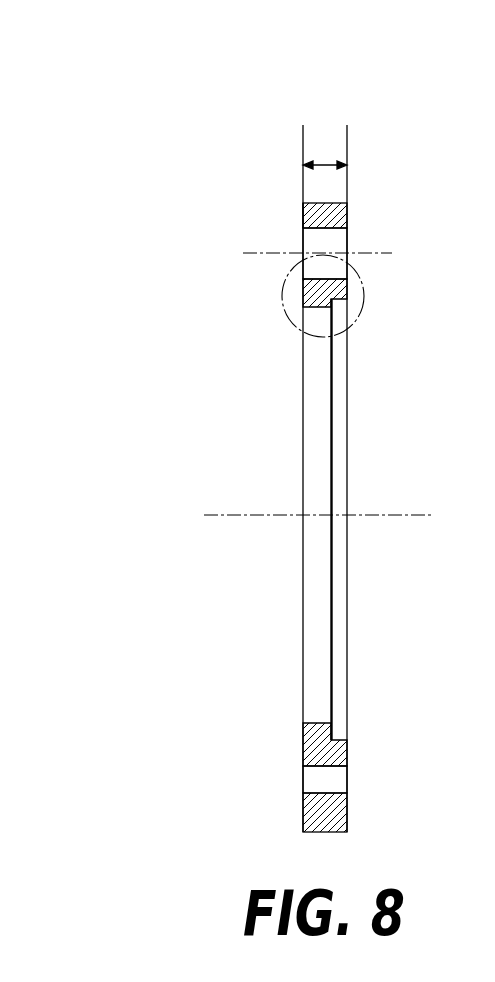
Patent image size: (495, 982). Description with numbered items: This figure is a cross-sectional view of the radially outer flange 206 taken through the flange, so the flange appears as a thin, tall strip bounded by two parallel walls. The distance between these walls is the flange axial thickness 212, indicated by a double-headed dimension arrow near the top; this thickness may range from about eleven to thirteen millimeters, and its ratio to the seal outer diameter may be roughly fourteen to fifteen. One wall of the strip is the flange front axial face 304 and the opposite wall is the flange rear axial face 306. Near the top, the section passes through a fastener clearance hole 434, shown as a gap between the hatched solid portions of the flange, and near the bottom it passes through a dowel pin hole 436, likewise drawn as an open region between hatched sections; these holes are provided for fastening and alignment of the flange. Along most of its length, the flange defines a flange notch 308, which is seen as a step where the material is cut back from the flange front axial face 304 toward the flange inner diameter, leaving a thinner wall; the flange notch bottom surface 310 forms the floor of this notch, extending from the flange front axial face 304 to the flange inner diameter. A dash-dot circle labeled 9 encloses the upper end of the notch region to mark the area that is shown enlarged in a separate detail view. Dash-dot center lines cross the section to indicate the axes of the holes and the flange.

The radially outer flange 206 is at (322, 107).
The flange axial thickness 212 is at (324, 163).
The flange front axial face 304 is at (346, 217).
The flange rear axial face 306 is at (303, 220).
The fastener clearance holes 434 is at (347, 239).
The detail area of FIG. 9 is at (283, 292).
The flange notch 308 is at (342, 728).
The flange notch bottom surface 310 is at (317, 743).
The dowel pin holes 436 is at (338, 778).